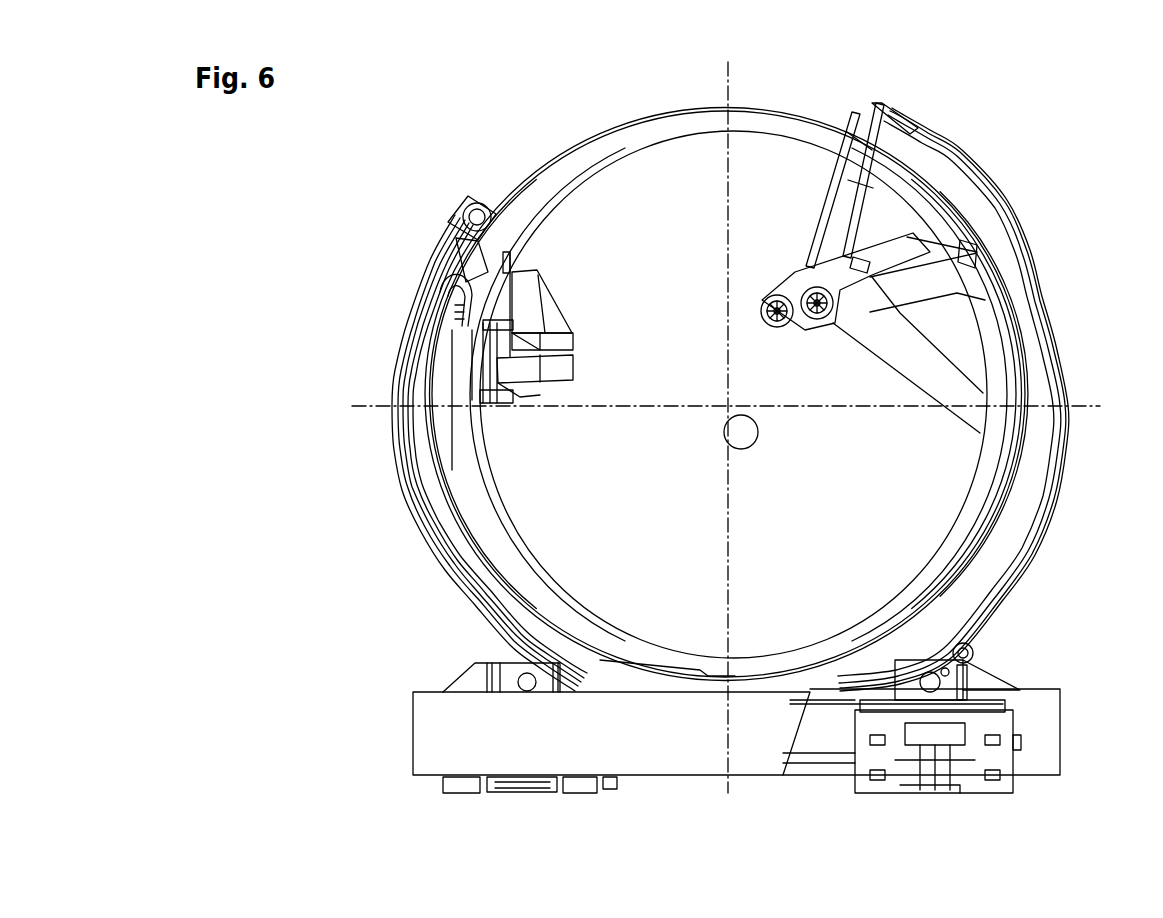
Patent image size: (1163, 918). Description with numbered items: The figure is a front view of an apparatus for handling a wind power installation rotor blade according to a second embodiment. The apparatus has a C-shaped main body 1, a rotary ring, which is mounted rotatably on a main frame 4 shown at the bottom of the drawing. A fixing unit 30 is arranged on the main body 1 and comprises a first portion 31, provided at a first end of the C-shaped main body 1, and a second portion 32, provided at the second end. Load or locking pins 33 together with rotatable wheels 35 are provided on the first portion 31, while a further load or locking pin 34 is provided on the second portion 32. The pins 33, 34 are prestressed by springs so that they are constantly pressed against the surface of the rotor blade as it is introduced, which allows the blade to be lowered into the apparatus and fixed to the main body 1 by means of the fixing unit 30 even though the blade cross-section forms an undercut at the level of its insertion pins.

The main body 1 is at (1022, 303).
The main frame 4 is at (437, 741).
The fixing unit 30 is at (543, 247).
The first portion 31 is at (798, 249).
The second portion 32 is at (551, 398).
The load or locking pins 33 is at (795, 284).
The load or locking pin 34 is at (500, 407).
The rotatable wheels 35 is at (814, 322).